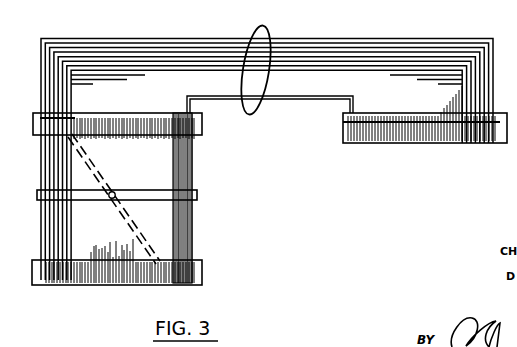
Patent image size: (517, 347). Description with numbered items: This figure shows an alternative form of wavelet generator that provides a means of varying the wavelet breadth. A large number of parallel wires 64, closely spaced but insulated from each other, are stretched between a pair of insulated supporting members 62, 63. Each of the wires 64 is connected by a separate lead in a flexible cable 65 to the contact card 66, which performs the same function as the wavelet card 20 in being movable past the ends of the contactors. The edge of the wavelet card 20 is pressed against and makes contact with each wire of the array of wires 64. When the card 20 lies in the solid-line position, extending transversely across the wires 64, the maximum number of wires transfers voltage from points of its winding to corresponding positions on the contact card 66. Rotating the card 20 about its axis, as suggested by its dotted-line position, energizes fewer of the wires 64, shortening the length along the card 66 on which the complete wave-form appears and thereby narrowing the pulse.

The wavelet card 20 is at (197, 195).
The insulated supporting member 62 is at (202, 134).
The insulated supporting member 63 is at (202, 266).
The parallel wires 64 is at (193, 220).
The flexible cable 65 is at (253, 110).
The contact card 66 is at (346, 146).